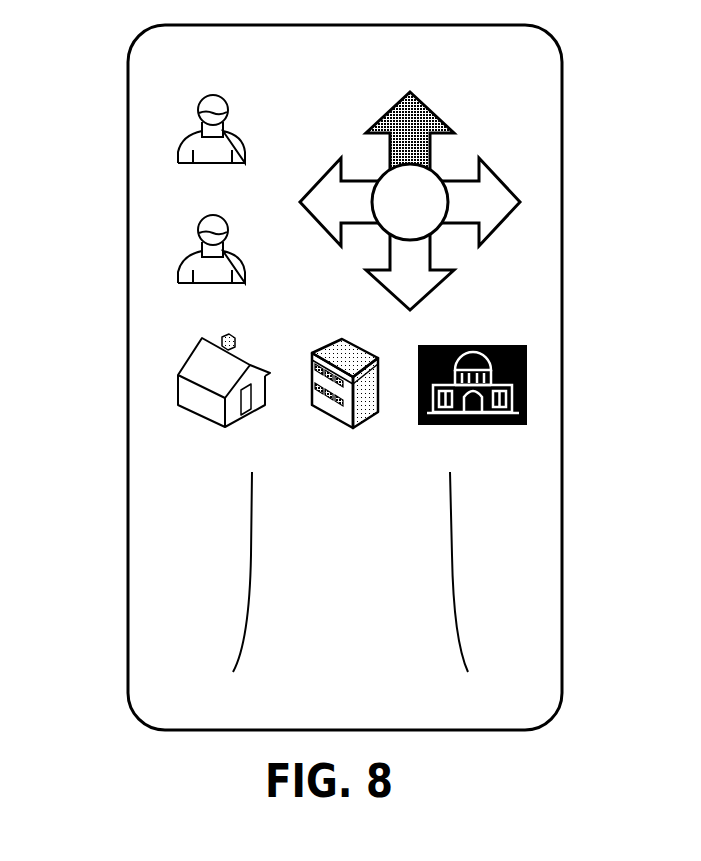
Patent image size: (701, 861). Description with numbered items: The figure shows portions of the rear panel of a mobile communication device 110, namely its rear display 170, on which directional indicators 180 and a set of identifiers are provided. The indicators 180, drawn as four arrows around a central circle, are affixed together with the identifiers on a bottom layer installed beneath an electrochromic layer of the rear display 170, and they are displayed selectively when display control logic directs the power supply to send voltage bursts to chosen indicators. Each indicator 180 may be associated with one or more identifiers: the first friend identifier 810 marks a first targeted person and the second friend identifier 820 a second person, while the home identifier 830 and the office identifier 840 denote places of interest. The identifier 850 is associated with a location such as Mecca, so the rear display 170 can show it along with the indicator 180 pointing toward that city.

The mobile device 110 is at (563, 113).
The rear display 170 is at (535, 297).
The indicators 180 is at (487, 201).
The identifier 810 is at (178, 145).
The identifier 820 is at (178, 262).
The home identifier 830 is at (180, 374).
The office identifier 840 is at (335, 413).
The identifier 850 is at (530, 385).